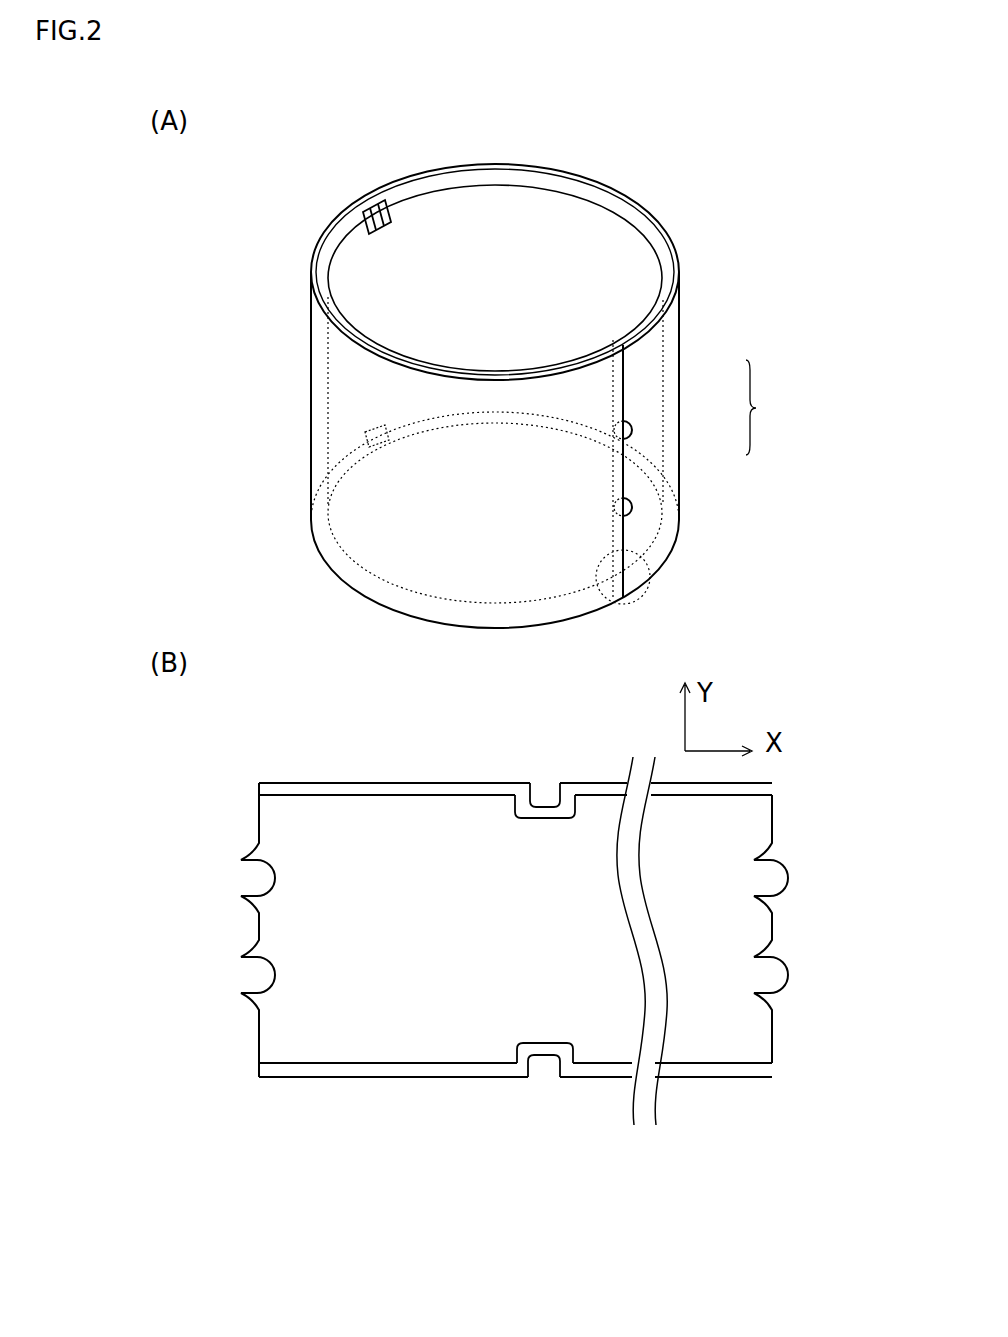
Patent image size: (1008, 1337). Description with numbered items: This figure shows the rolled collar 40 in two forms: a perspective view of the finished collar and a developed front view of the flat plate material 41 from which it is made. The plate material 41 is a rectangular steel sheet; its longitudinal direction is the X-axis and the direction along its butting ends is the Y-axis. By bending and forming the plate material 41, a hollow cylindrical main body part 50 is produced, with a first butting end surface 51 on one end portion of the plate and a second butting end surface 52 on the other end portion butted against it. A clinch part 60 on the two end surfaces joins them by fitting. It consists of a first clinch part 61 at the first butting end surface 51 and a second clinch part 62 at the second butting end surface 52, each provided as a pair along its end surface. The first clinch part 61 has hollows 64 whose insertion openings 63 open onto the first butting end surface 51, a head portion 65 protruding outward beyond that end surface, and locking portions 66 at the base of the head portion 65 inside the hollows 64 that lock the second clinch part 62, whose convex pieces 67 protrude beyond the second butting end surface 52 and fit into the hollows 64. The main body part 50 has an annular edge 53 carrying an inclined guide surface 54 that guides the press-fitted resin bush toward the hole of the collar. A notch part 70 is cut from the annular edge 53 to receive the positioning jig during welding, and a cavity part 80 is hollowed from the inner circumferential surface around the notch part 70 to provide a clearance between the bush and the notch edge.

The rolled collar 40 is at (218, 178).
The plate material 41 is at (313, 795).
The main body part 50 is at (312, 425).
The first butting end surface 51 is at (640, 585).
The second butting end surface 52 is at (603, 605).
The annular edge 53 is at (505, 163).
The guide surface 54 is at (587, 197).
The clinch part 60 is at (770, 407).
The first clinch part 61 is at (640, 432).
The second clinch part 62 is at (635, 425).
The insertion opening 63 is at (772, 843).
The hollow 64 is at (750, 858).
The head portion 65 is at (788, 878).
The locking portion 66 is at (750, 886).
The convex piece 67 is at (262, 907).
The notch part 70 is at (373, 210).
The cavity part 80 is at (383, 232).